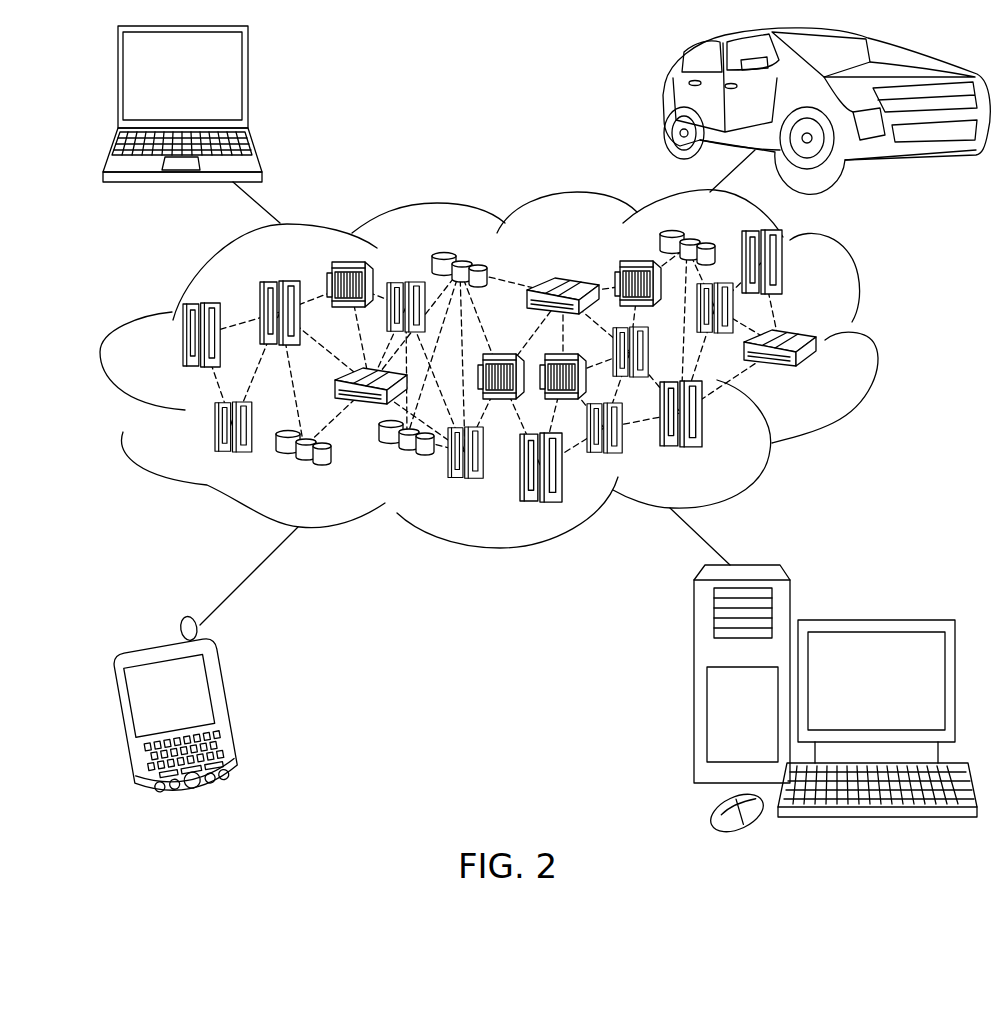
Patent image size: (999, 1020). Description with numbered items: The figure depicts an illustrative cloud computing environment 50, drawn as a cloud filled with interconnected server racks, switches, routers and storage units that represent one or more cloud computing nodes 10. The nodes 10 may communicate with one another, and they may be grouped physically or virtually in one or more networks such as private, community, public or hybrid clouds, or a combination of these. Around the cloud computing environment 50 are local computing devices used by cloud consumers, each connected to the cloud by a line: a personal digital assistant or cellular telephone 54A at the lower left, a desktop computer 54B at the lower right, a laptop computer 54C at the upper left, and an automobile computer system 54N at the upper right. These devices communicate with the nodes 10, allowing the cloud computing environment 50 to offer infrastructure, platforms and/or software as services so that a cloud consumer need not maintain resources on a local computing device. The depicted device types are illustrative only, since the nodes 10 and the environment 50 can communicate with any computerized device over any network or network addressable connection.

The cloud computing node 10 is at (822, 374).
The cloud computing environment 50 is at (875, 343).
The personal digital assistant or cellular telephone 54A is at (237, 710).
The desktop computer 54B is at (873, 620).
The laptop computer 54C is at (248, 83).
The automobile computer system 54N is at (665, 97).